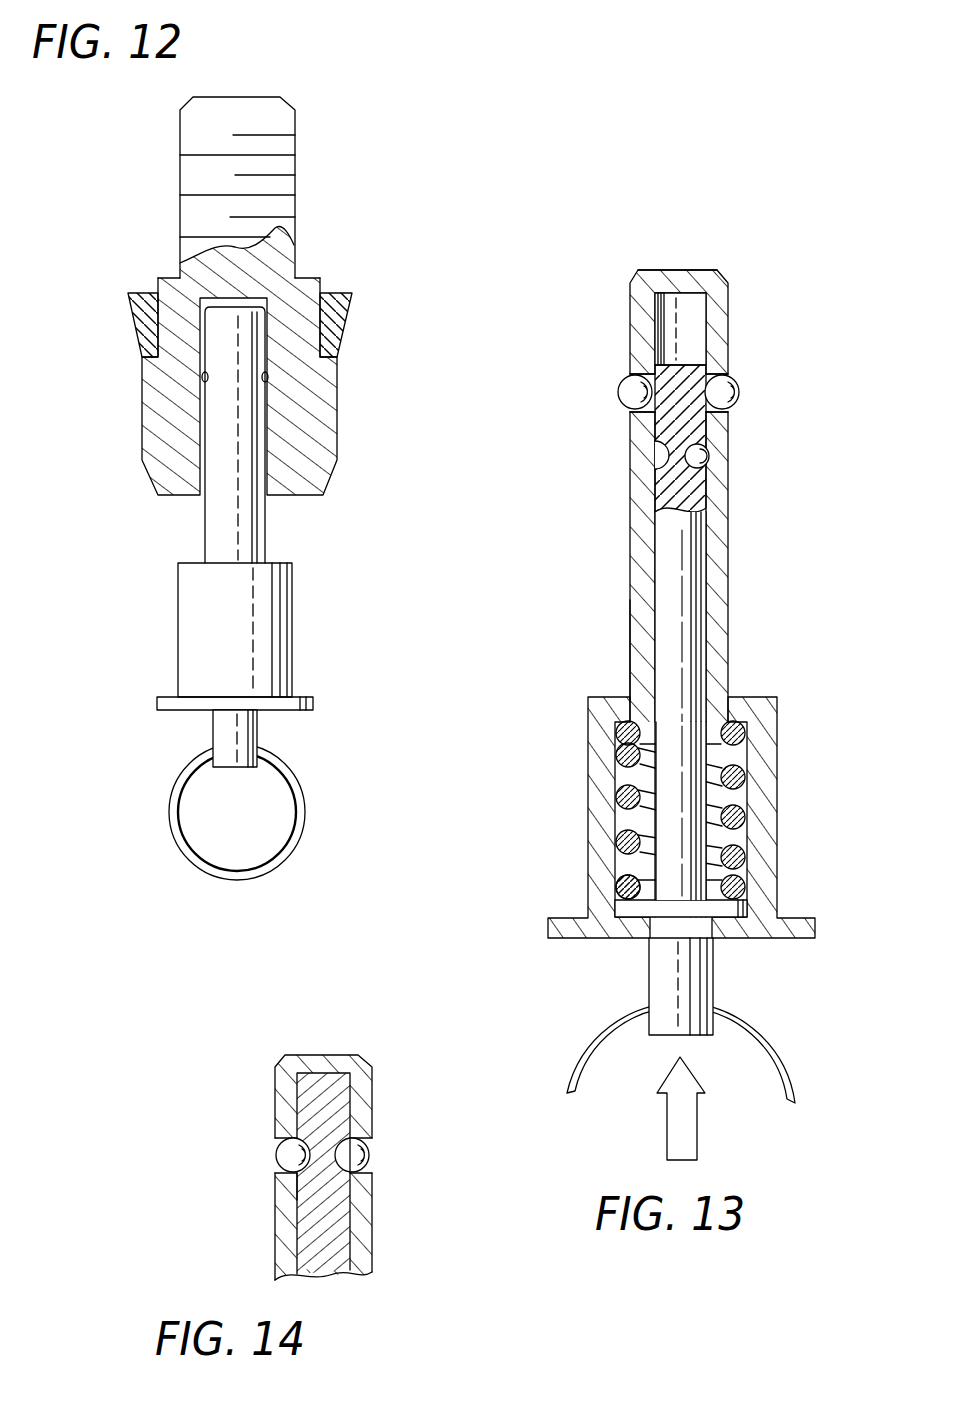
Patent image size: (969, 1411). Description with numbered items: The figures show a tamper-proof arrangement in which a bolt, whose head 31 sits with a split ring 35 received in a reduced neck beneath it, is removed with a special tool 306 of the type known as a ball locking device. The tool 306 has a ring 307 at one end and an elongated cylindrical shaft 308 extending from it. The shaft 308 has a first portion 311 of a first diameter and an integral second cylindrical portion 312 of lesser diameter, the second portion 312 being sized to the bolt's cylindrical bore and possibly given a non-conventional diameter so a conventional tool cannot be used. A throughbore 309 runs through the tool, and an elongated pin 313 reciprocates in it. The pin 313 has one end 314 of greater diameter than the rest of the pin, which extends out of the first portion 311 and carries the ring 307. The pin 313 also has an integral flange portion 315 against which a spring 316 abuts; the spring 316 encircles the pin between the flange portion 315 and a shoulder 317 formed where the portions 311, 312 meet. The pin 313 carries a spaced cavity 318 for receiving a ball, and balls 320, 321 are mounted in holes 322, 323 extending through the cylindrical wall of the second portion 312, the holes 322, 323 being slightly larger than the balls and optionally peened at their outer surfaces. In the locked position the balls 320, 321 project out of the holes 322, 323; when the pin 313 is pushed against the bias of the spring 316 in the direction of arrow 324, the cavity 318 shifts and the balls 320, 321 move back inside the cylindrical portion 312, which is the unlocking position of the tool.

In FIG. 12, the head 31 is at (341, 420).
In FIG. 12, the split ring 35 is at (350, 337).
In FIG. 12, the special tool 306 is at (156, 612).
In FIG. 13, the special tool 306 is at (686, 253).
In FIG. 12, the ring 307 is at (169, 808).
In FIG. 13, the ring 307 is at (590, 1045).
In FIG. 12, the elongated cylindrical shaft 308 is at (271, 522).
In FIG. 13, the elongated cylindrical shaft 308 is at (730, 538).
In FIG. 14, the elongated cylindrical shaft 308 is at (323, 1167).
In FIG. 13, the throughbore 309 is at (665, 560).
In FIG. 13, the first portion 311 is at (588, 808).
In FIG. 13, the second cylindrical portion 312 is at (630, 636).
In FIG. 13, the elongated pin 313 is at (683, 592).
In FIG. 13, the end 314 is at (713, 985).
In FIG. 13, the flange portion 315 is at (722, 722).
In FIG. 13, the spring 316 is at (627, 853).
In FIG. 13, the shoulder 317 is at (708, 458).
In FIG. 14, the shoulder 317 is at (336, 1145).
In FIG. 13, the cavity 318 is at (663, 458).
In FIG. 14, the cavity 318 is at (300, 1172).
In FIG. 13, the ball 320 is at (618, 392).
In FIG. 14, the ball 320 is at (276, 1165).
In FIG. 13, the ball 321 is at (740, 392).
In FIG. 14, the ball 321 is at (369, 1148).
In FIG. 13, the hole 322 is at (633, 373).
In FIG. 13, the hole 323 is at (725, 373).
In FIG. 13, the arrow 324 is at (667, 1120).